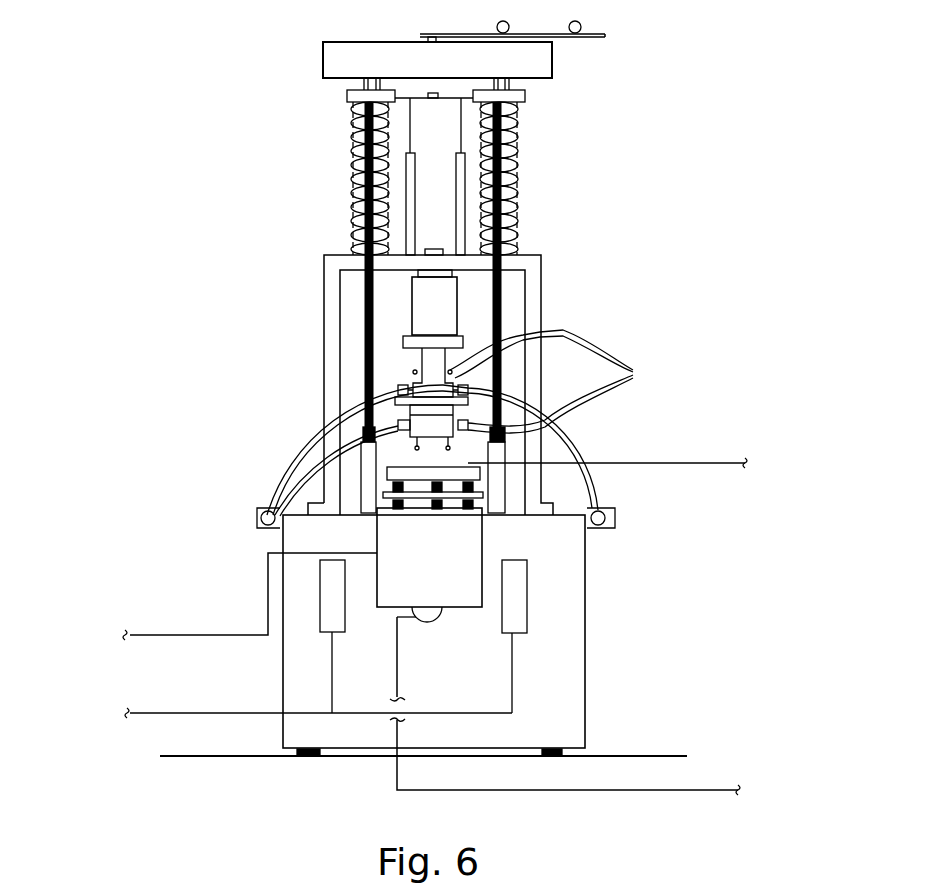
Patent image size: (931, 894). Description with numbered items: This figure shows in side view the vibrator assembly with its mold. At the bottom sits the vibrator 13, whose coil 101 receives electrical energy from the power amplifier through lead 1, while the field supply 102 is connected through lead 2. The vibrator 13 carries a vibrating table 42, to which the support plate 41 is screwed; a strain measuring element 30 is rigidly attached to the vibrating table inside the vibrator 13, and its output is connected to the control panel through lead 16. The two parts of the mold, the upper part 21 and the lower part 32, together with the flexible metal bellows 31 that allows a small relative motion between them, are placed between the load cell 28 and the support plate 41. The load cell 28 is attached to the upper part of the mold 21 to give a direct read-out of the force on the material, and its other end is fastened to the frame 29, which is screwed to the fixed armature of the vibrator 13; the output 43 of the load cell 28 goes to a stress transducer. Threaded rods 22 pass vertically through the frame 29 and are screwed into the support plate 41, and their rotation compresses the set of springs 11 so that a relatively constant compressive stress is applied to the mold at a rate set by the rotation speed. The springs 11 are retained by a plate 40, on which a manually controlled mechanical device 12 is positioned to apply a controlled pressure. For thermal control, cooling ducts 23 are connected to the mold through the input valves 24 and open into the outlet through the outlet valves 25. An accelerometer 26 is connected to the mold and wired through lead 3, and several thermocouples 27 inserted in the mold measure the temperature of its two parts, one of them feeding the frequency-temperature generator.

The electrical lead 1 is at (163, 635).
The electrical lead 2 is at (168, 712).
The electrical lead 3 is at (673, 463).
The set of springs 11 is at (518, 162).
The mechanical device 12 is at (543, 62).
The vibrator 13 is at (623, 706).
The electrical lead 16 is at (635, 792).
The upper part of the mold 21 is at (398, 388).
The threaded rods 22 is at (398, 426).
The cooling ducts 23 is at (588, 508).
The input valves 24 is at (258, 533).
The outlet valves 25 is at (604, 530).
The accelerometer 26 is at (418, 458).
The thermocouples 27 is at (559, 381).
The load cell 28 is at (427, 310).
The frame 29 is at (534, 269).
The strain measuring element 30 is at (438, 613).
The bellows 31 is at (435, 387).
The lower part of the mold 32 is at (393, 474).
The plate 40 is at (463, 220).
The support plate 41 is at (363, 495).
The vibrating table 42 is at (458, 513).
The output of the load cell 43 is at (541, 302).
The coil 101 is at (483, 534).
The field supply 102 is at (523, 598).